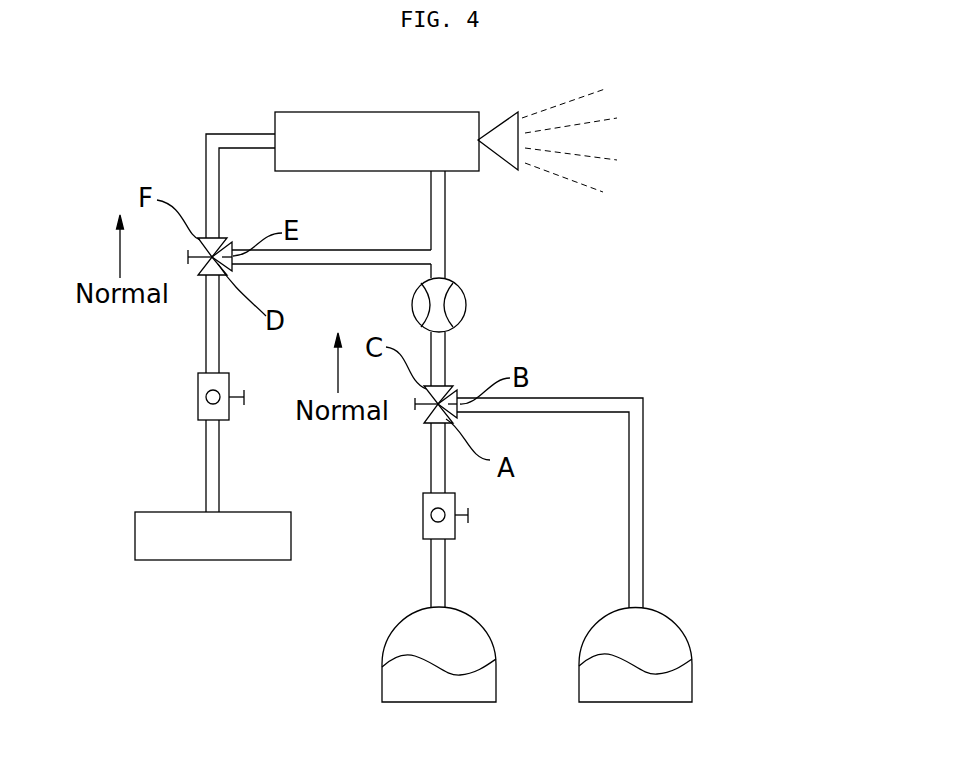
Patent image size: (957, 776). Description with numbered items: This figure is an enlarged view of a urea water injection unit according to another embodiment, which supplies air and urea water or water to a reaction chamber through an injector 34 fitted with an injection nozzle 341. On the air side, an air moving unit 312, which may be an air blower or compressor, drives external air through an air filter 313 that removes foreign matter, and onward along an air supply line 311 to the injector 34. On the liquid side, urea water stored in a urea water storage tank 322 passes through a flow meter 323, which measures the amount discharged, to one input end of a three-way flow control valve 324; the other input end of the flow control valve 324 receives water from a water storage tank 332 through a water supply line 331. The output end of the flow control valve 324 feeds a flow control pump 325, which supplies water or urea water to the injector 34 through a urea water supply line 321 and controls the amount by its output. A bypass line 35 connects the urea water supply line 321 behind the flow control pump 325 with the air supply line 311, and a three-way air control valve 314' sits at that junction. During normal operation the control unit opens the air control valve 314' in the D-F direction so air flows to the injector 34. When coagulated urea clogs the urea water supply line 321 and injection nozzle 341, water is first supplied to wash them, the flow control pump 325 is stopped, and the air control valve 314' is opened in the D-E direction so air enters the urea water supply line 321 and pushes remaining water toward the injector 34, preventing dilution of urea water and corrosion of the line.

The injector 34 is at (319, 125).
The injection nozzle 341 is at (505, 128).
The air supply line 311 is at (213, 193).
The air control valve 314' is at (169, 297).
The air filter 313 is at (198, 417).
The air moving unit 312 is at (135, 533).
The urea water supply line 321 is at (441, 209).
The bypass line 35 is at (395, 255).
The flow control pump 325 is at (420, 303).
The flow control valve 324 is at (411, 429).
The flow meter 323 is at (423, 530).
The urea water storage tank 322 is at (395, 690).
The water supply line 331 is at (632, 506).
The water storage tank 332 is at (685, 687).